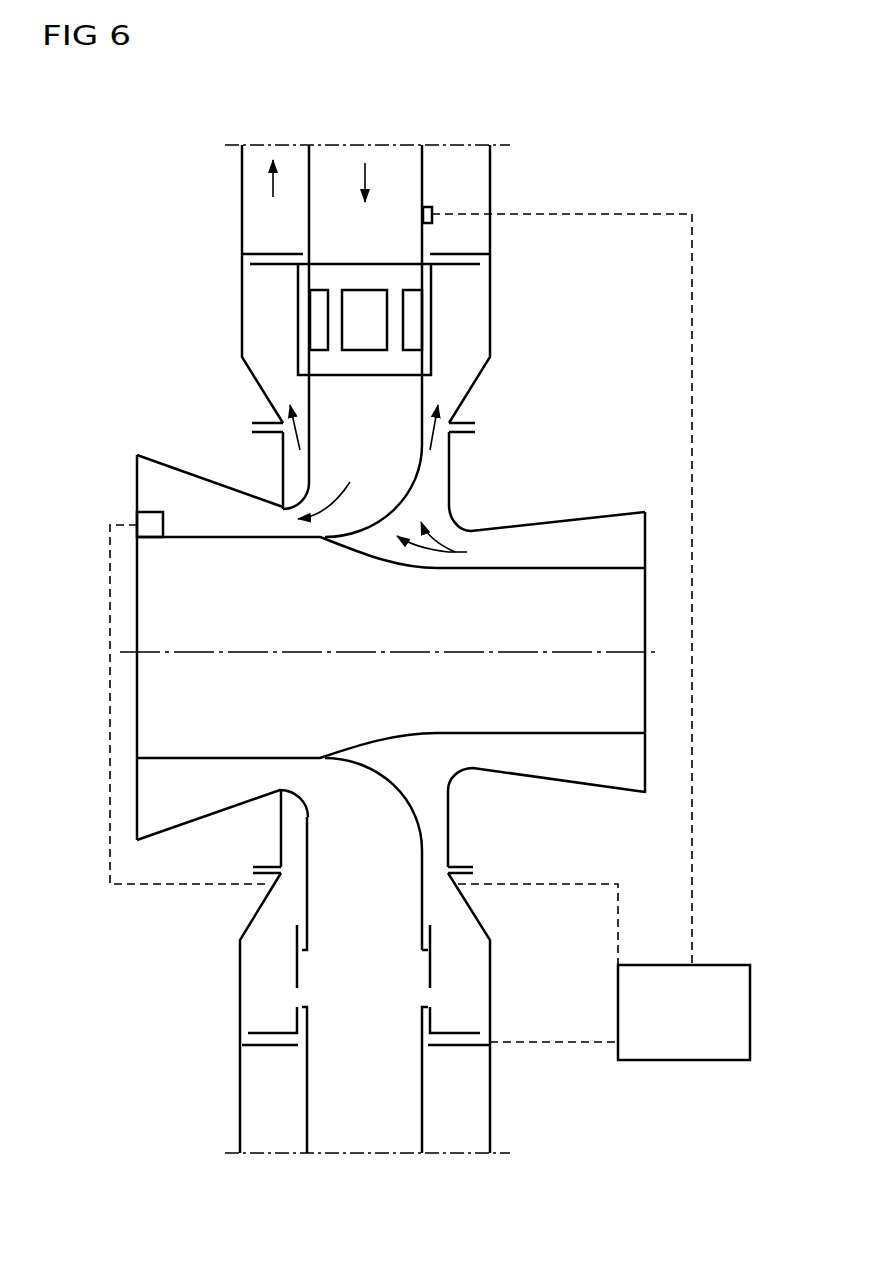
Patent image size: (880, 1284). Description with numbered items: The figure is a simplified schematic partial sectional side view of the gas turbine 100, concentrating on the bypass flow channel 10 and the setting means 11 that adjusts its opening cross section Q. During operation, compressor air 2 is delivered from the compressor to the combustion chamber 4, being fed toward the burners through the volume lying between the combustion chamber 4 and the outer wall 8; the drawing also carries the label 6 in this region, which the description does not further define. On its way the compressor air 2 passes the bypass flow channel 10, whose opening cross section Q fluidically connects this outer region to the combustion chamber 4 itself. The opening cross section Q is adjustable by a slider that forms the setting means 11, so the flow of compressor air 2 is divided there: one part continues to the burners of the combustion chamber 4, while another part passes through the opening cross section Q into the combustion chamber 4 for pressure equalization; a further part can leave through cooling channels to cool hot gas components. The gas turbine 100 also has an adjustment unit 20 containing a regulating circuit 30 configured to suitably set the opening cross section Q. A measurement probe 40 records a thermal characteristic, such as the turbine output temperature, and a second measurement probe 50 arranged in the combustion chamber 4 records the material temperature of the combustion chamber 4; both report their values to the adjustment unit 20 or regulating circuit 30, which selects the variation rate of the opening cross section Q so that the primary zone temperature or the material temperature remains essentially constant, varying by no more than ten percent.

The gas turbine 100 is at (135, 183).
The outer wall 8 is at (242, 196).
The combustion chamber 4 is at (398, 162).
The bypass flow 6 is at (365, 170).
The compressor air 2 is at (456, 550).
The second measurement probe 50 is at (428, 205).
The measurement probe 40 is at (150, 520).
The setting means 11 is at (433, 298).
The bypass flow channel 10 is at (342, 337).
The opening cross section Q is at (353, 310).
The adjustment unit 20 is at (684, 1056).
The regulating circuit 30 is at (693, 1062).